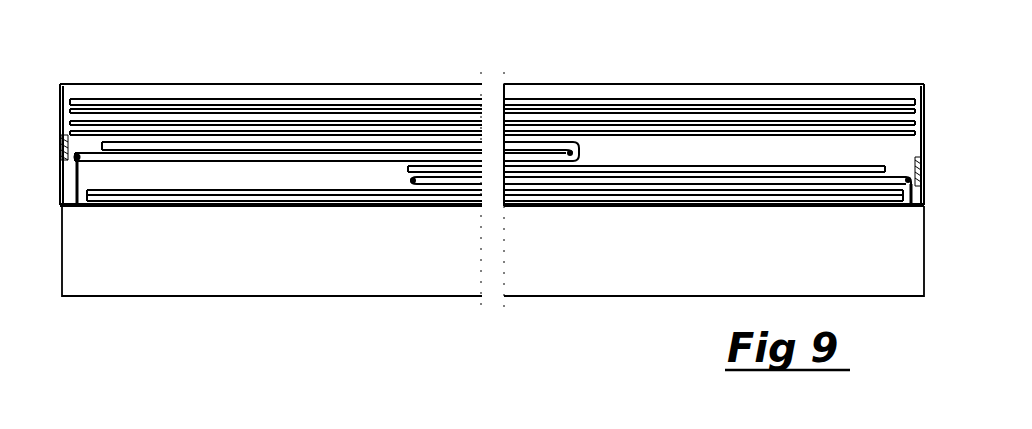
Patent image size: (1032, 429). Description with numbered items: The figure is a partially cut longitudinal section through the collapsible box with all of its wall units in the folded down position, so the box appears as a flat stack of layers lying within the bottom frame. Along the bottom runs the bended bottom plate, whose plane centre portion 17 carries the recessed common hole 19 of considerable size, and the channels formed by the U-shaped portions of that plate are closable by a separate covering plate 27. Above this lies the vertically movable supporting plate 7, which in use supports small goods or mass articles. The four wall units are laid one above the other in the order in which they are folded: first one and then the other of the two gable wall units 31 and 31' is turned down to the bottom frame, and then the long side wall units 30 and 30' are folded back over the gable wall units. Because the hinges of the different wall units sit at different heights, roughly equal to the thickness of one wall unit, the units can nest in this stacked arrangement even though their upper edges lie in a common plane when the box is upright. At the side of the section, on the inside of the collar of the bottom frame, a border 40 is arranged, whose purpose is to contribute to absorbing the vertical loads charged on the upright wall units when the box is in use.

The covering plate 27 is at (66, 93).
The long side wall unit 30' is at (492, 74).
The long side wall unit 30 is at (492, 85).
The plane centre portion 17 is at (288, 207).
The supporting plate 7 is at (373, 190).
The common hole 19 is at (438, 207).
The gable wall unit 31 is at (660, 212).
The gable wall unit 31' is at (646, 215).
The border 40 is at (923, 172).